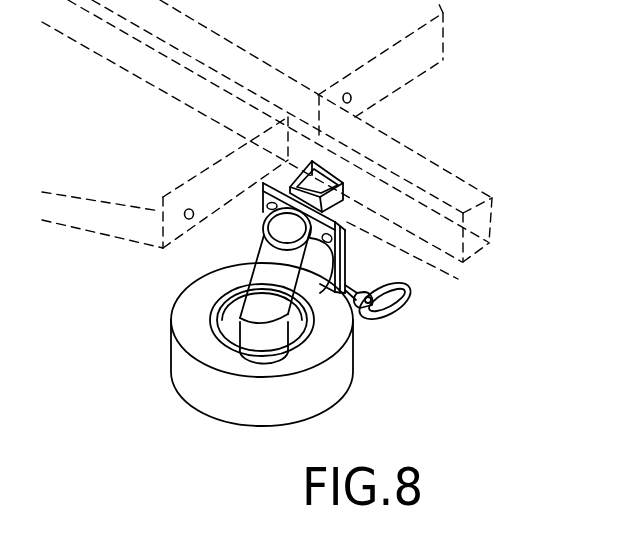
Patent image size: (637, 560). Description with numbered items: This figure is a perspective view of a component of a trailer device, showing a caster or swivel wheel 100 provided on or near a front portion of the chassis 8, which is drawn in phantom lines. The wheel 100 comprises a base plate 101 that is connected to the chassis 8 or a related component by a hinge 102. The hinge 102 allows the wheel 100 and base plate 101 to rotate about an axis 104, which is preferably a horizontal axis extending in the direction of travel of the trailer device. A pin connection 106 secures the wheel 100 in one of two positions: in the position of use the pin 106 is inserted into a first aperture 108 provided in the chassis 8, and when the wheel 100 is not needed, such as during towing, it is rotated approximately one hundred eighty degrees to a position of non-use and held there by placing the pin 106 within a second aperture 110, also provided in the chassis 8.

The chassis 8 is at (425, 66).
The caster or swivel wheel 100 is at (331, 386).
The base plate 101 is at (346, 256).
The hinge 102 is at (300, 208).
The axis 104 is at (456, 280).
The pin connection 106 is at (383, 323).
The first aperture 108 is at (351, 99).
The second aperture 110 is at (190, 210).